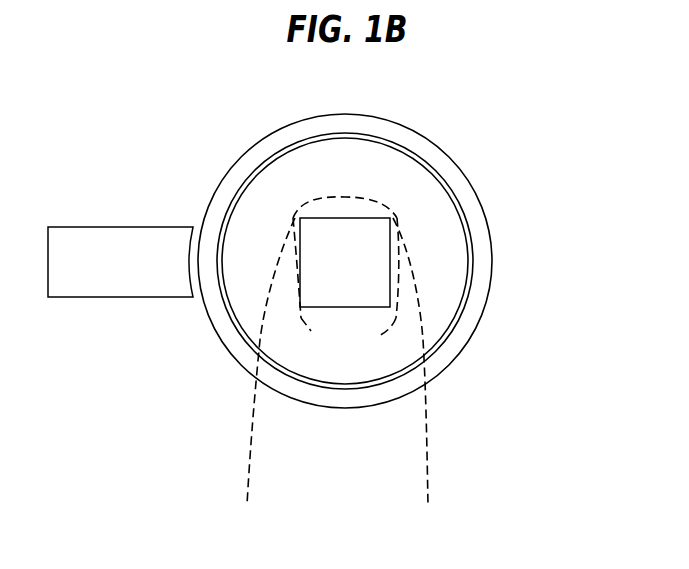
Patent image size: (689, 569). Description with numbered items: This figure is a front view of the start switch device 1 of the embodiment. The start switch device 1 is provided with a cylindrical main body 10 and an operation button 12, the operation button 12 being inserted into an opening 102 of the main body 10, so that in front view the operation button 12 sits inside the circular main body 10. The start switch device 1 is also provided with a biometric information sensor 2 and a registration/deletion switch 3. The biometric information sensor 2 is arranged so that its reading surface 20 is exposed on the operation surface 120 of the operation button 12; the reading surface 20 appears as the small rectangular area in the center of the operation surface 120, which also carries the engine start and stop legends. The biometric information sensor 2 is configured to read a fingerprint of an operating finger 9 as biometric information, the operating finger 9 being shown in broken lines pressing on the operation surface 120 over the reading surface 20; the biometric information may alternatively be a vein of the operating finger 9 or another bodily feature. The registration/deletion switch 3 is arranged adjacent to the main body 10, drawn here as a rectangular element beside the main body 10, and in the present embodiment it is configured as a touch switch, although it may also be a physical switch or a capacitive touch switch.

The start switch device 1 is at (408, 111).
The main body 10 is at (467, 207).
The operation button 12 is at (447, 188).
The operation surface 120 is at (413, 177).
The opening 102 is at (472, 254).
The biometric information sensor 2 is at (373, 288).
The reading surface 20 is at (390, 278).
The registration/deletion switch 3 is at (150, 252).
The operating finger 9 is at (425, 438).